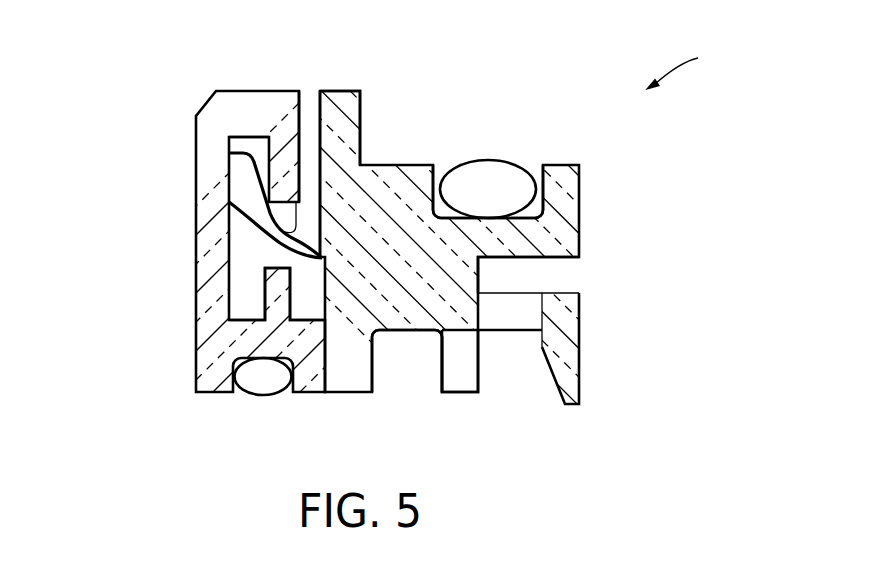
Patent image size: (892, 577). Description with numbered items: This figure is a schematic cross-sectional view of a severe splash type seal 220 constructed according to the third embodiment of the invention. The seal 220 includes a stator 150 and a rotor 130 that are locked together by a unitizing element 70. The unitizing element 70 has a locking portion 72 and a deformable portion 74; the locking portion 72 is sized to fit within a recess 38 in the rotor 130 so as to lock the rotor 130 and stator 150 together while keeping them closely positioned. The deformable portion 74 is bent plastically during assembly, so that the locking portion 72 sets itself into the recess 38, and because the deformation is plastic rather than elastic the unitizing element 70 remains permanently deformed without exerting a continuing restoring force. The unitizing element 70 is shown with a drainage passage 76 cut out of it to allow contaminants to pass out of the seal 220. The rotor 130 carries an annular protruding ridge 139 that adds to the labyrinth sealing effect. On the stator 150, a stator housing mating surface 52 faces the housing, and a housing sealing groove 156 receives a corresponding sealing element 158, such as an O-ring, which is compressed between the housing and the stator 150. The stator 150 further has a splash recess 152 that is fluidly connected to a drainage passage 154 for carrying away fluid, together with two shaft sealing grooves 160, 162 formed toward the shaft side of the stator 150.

The rotor 130 is at (227, 117).
The recess 38 is at (240, 141).
The locking portion 72 is at (240, 182).
The unitizing element 70 is at (250, 220).
The deformable portion 74 is at (278, 242).
The annular protruding ridge 139 is at (270, 287).
The drainage passage 76 is at (308, 113).
The stator 150 is at (368, 218).
The stator housing mating surface 52 is at (361, 107).
The housing sealing groove 156 is at (528, 216).
The sealing element 158 is at (486, 178).
The splash recess 152 is at (542, 275).
The drainage passage 154 is at (513, 318).
The shaft sealing groove 160 is at (403, 355).
The shaft sealing groove 162 is at (502, 355).
The severe splash type seal 220 is at (708, 64).